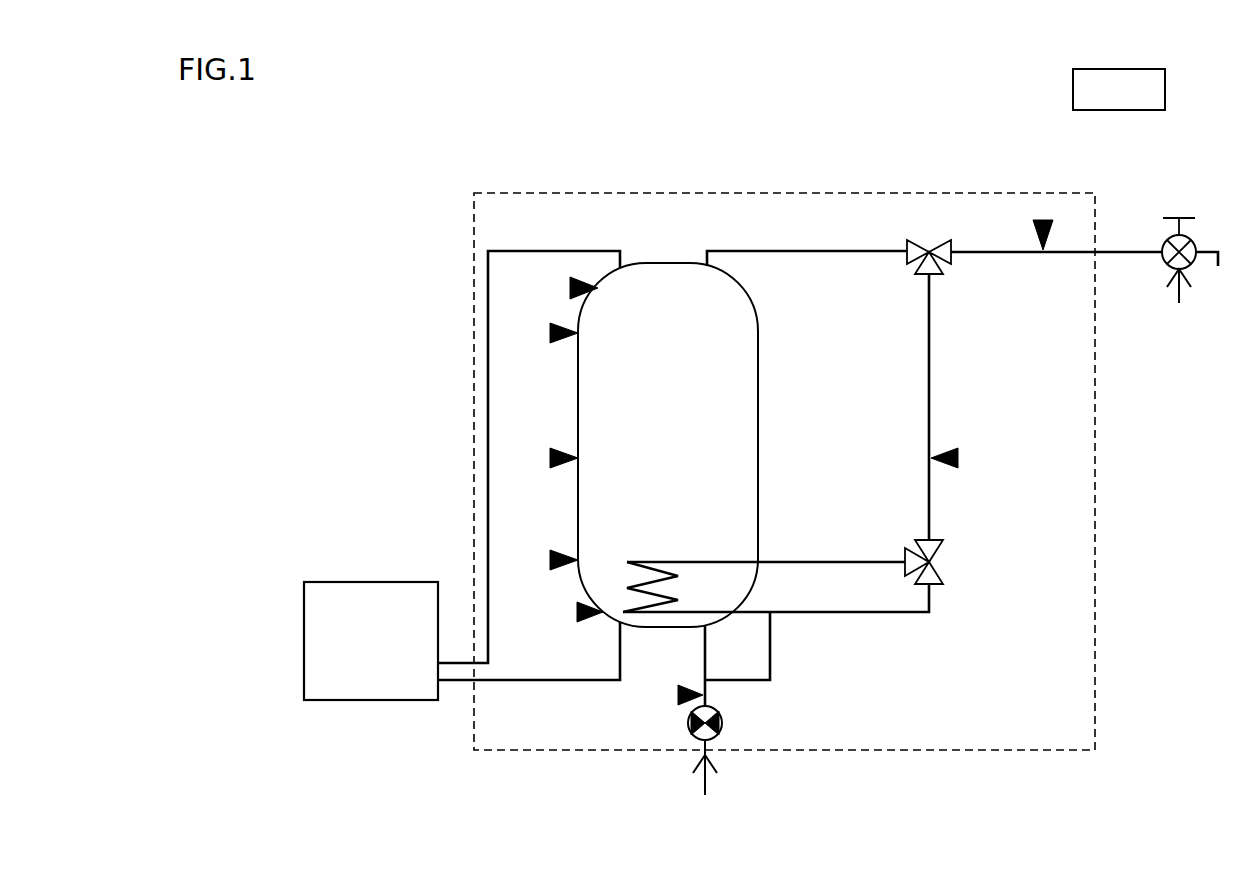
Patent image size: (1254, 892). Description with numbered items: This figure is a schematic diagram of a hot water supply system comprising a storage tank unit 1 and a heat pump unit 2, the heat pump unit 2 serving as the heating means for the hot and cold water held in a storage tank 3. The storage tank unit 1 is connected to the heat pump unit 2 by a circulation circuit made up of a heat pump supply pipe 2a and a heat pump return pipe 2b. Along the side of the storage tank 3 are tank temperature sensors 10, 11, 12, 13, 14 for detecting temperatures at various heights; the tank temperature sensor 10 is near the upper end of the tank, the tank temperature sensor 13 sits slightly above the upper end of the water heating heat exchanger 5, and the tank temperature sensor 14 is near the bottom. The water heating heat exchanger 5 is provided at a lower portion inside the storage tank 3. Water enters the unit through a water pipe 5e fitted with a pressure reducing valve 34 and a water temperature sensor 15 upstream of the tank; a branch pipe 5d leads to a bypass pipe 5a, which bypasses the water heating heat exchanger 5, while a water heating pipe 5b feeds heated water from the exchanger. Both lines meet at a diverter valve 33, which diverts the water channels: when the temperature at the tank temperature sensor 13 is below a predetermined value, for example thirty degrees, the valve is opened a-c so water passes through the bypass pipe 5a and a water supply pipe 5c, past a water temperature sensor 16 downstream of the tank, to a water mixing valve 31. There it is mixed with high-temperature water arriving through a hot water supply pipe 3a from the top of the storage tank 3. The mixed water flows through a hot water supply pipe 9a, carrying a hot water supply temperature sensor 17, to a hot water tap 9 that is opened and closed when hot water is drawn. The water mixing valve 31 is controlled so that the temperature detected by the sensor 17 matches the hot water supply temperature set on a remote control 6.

The storage tank unit 1 is at (474, 212).
The heat pump unit 2 is at (370, 582).
The heat pump supply pipe 2a is at (520, 681).
The heat pump return pipe 2b is at (487, 432).
The storage tank 3 is at (578, 398).
The hot water supply pipe 3a is at (800, 250).
The water heating heat exchanger 5 is at (655, 565).
The bypass pipe 5a is at (776, 614).
The water heating pipe 5b is at (766, 577).
The water supply pipe 5c is at (912, 407).
The branch pipe 5d is at (737, 646).
The water pipe 5e is at (688, 665).
The remote control 6 is at (1073, 85).
The hot water tap 9 is at (1180, 218).
The hot water supply pipe 9a is at (995, 251).
The tank temperature sensor 10 is at (569, 289).
The tank temperature sensor 11 is at (548, 334).
The tank temperature sensor 12 is at (548, 459).
The tank temperature sensor 13 is at (548, 561).
The tank temperature sensor 14 is at (574, 613).
The water temperature sensor 15 is at (675, 697).
The water temperature sensor 16 is at (961, 460).
The hot water supply temperature sensor 17 is at (1044, 222).
The water mixing valve 31 is at (933, 243).
The diverter valve 33 is at (935, 563).
The pressure reducing valve 34 is at (722, 722).